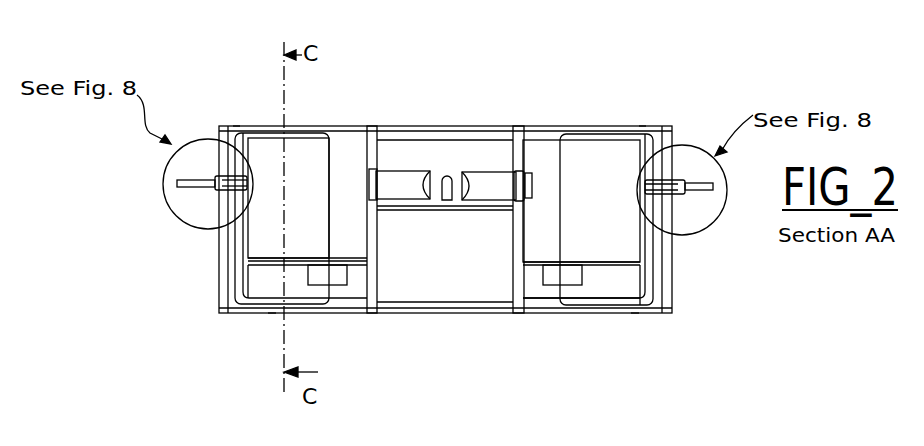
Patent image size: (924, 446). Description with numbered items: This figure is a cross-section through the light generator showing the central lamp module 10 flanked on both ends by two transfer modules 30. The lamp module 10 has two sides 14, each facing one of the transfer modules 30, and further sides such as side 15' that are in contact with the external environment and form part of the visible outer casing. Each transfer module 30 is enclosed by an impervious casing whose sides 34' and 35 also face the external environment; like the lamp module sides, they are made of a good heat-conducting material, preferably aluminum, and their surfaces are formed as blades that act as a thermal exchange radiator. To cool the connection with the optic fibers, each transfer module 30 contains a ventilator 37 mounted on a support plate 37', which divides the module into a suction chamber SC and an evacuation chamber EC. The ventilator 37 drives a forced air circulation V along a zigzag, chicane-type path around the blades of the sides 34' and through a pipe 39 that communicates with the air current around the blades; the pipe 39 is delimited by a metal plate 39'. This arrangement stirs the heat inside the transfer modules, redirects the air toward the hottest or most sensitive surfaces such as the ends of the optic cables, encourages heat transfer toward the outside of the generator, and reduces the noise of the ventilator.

The lamp module 10 is at (402, 121).
The sides of the lamp module 14 is at (512, 152).
The side of the lamp module 15' is at (445, 353).
The transfer module 30 is at (318, 323).
The side of the transfer module 34' is at (452, 228).
The side of the transfer module 35 is at (220, 262).
The ventilator 37 is at (456, 345).
The support plate of the ventilator 37' is at (444, 326).
The pipe 39 is at (498, 233).
The metal plate 39' is at (507, 215).
The forced air circulation V is at (316, 131).
The evacuation chamber EC is at (543, 153).
The suction chamber SC is at (544, 298).